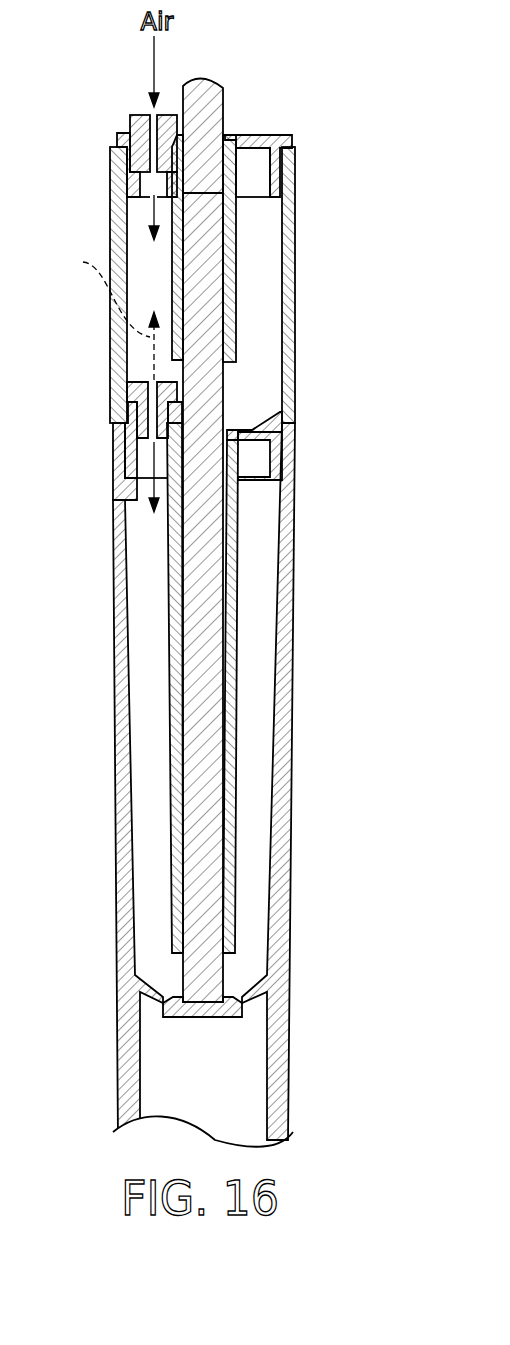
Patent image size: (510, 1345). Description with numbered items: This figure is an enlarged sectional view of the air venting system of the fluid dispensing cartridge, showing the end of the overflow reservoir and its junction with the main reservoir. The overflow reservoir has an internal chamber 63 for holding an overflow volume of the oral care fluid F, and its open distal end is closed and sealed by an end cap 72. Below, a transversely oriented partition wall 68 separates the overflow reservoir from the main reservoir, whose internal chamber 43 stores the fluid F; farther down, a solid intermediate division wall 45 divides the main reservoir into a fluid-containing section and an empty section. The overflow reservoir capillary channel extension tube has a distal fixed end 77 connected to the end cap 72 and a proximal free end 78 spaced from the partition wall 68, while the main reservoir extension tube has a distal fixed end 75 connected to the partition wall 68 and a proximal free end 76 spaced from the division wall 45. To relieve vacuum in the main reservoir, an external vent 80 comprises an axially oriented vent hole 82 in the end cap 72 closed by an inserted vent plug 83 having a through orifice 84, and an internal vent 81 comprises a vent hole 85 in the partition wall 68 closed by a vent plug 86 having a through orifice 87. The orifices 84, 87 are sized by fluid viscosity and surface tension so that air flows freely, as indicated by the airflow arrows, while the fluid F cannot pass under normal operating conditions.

The internal chamber 43 is at (258, 640).
The intermediate division wall 45 is at (255, 978).
The internal chamber 63 is at (263, 270).
The partition wall 68 is at (252, 418).
The end cap 72 is at (262, 135).
The distal fixed end 75 is at (240, 443).
The proximal free end 76 is at (238, 953).
The distal fixed end 77 is at (237, 150).
The proximal free end 78 is at (236, 360).
The external vent 80 is at (118, 127).
The internal vent 81 is at (104, 408).
The vent hole 82 is at (140, 167).
The vent plug 83 is at (130, 115).
The through orifice 84 is at (157, 120).
The vent hole 85 is at (172, 420).
The vent plug 86 is at (140, 382).
The through orifice 87 is at (113, 425).
The oral care fluid F is at (106, 292).